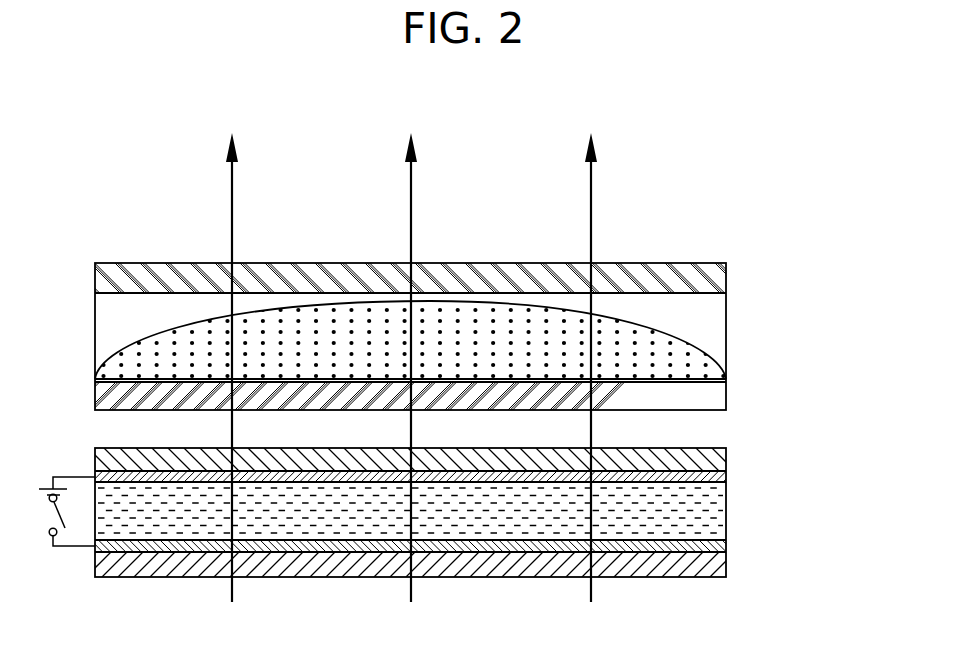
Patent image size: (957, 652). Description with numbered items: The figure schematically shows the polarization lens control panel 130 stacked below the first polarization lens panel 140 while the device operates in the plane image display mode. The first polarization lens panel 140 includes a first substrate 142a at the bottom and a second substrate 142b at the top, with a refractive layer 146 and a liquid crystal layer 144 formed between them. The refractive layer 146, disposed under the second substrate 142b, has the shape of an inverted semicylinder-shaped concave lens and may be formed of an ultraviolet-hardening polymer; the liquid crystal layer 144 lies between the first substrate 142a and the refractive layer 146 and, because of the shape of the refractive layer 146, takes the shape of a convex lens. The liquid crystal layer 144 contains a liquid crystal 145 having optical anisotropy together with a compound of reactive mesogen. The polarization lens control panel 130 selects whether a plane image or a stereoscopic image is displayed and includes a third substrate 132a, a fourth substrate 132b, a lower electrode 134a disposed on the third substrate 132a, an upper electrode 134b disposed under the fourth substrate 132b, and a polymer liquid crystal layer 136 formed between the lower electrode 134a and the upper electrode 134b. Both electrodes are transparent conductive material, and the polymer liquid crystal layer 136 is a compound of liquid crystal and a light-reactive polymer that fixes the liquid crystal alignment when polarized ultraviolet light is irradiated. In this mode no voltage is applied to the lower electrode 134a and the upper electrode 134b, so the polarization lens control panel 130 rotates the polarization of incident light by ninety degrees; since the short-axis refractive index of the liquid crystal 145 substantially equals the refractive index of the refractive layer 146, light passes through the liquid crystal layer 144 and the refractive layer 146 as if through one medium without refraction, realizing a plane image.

The polarization lens control panel 130 is at (446, 512).
The third substrate 132a is at (707, 569).
The fourth substrate 132b is at (710, 464).
The lower electrode 134a is at (707, 550).
The upper electrode 134b is at (706, 479).
The polymer liquid crystal layer 136 is at (707, 513).
The first polarization lens panel 140 is at (460, 336).
The first substrate 142a is at (708, 402).
The second substrate 142b is at (708, 283).
The liquid crystal layer 144 is at (708, 371).
The liquid crystal 145 is at (712, 352).
The refractive layer 146 is at (707, 320).